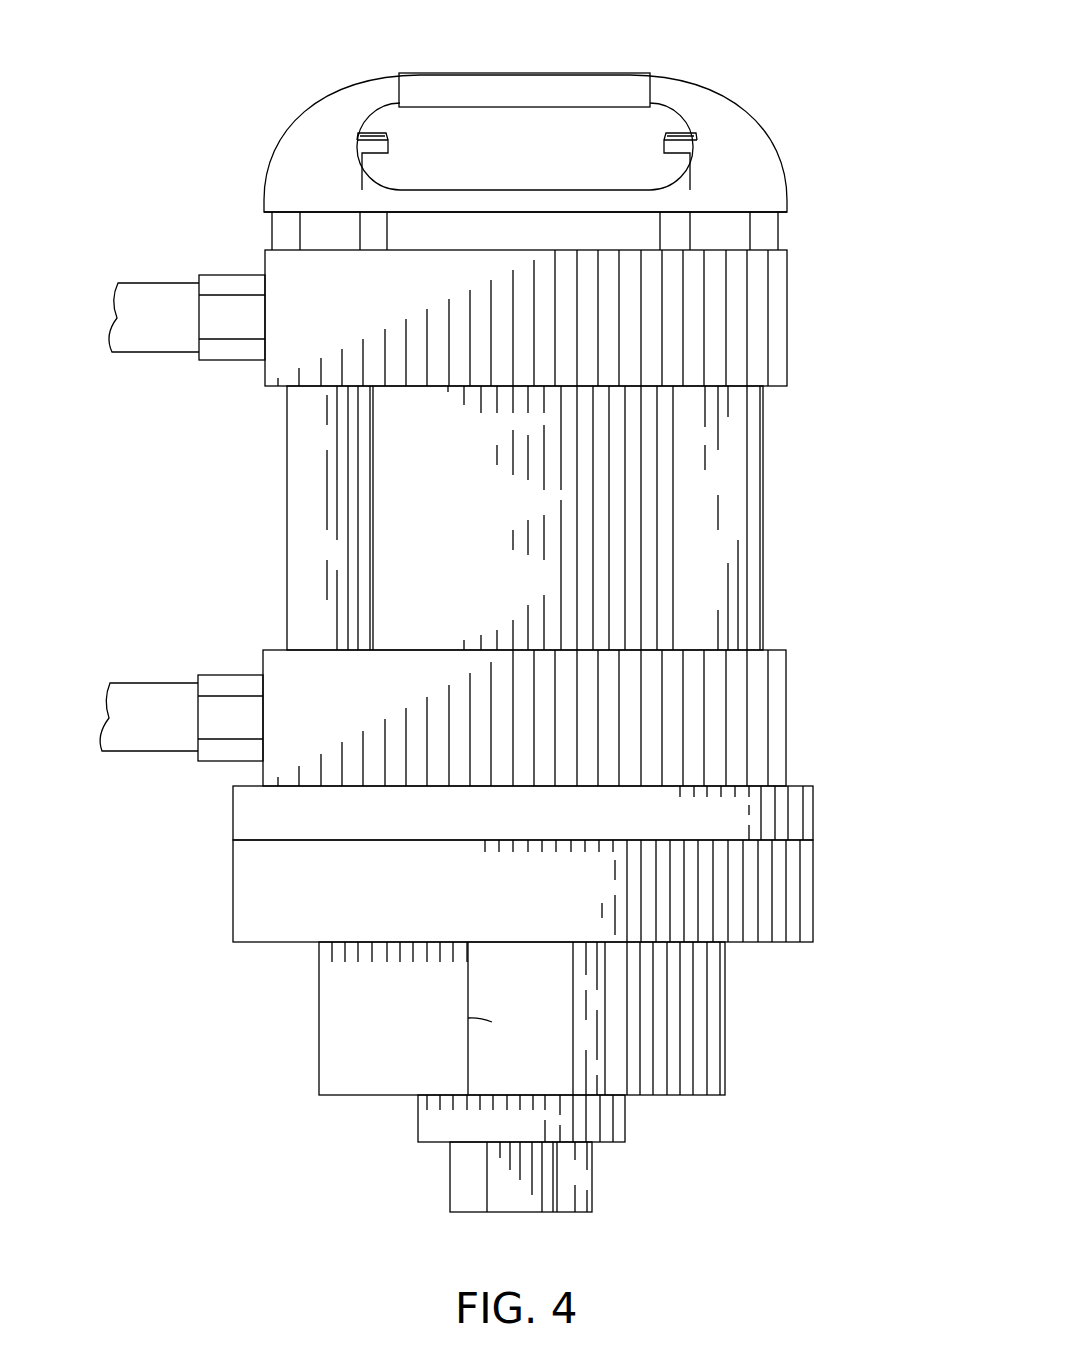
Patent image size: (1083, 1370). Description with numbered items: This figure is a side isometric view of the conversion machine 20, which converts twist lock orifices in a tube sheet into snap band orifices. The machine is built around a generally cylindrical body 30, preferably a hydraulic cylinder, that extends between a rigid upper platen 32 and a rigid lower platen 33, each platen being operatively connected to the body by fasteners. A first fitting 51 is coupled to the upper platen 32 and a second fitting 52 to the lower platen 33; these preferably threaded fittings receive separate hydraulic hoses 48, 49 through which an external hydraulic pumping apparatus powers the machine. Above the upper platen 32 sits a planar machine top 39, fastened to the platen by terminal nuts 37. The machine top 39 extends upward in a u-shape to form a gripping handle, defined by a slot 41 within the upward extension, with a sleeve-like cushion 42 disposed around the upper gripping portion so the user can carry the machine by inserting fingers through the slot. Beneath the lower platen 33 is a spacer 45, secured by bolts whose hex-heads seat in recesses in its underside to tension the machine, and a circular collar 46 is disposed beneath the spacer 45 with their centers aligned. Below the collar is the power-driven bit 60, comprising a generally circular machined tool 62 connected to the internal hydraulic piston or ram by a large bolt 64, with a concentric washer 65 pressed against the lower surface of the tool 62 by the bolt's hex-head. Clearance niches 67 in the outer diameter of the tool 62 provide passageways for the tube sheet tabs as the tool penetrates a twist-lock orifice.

The conversion machine 20 is at (776, 38).
The cylindrical body 30 is at (404, 501).
The upper platen 32 is at (782, 304).
The lower platen 33 is at (772, 723).
The terminal nuts 37 is at (668, 175).
The machine top 39 is at (520, 200).
The slot 41 is at (442, 150).
The cushion 42 is at (553, 85).
The spacer 45 is at (787, 818).
The circular collar 46 is at (788, 892).
The hydraulic hose 48 is at (140, 320).
The hydraulic hose 49 is at (130, 710).
The first fitting 51 is at (233, 283).
The second fitting 52 is at (233, 685).
The power-driven bit 60 is at (300, 967).
The machined tool 62 is at (342, 1018).
The bolt 64 is at (570, 1178).
The concentric washer 65 is at (605, 1121).
The clearance niches 67 is at (468, 1018).